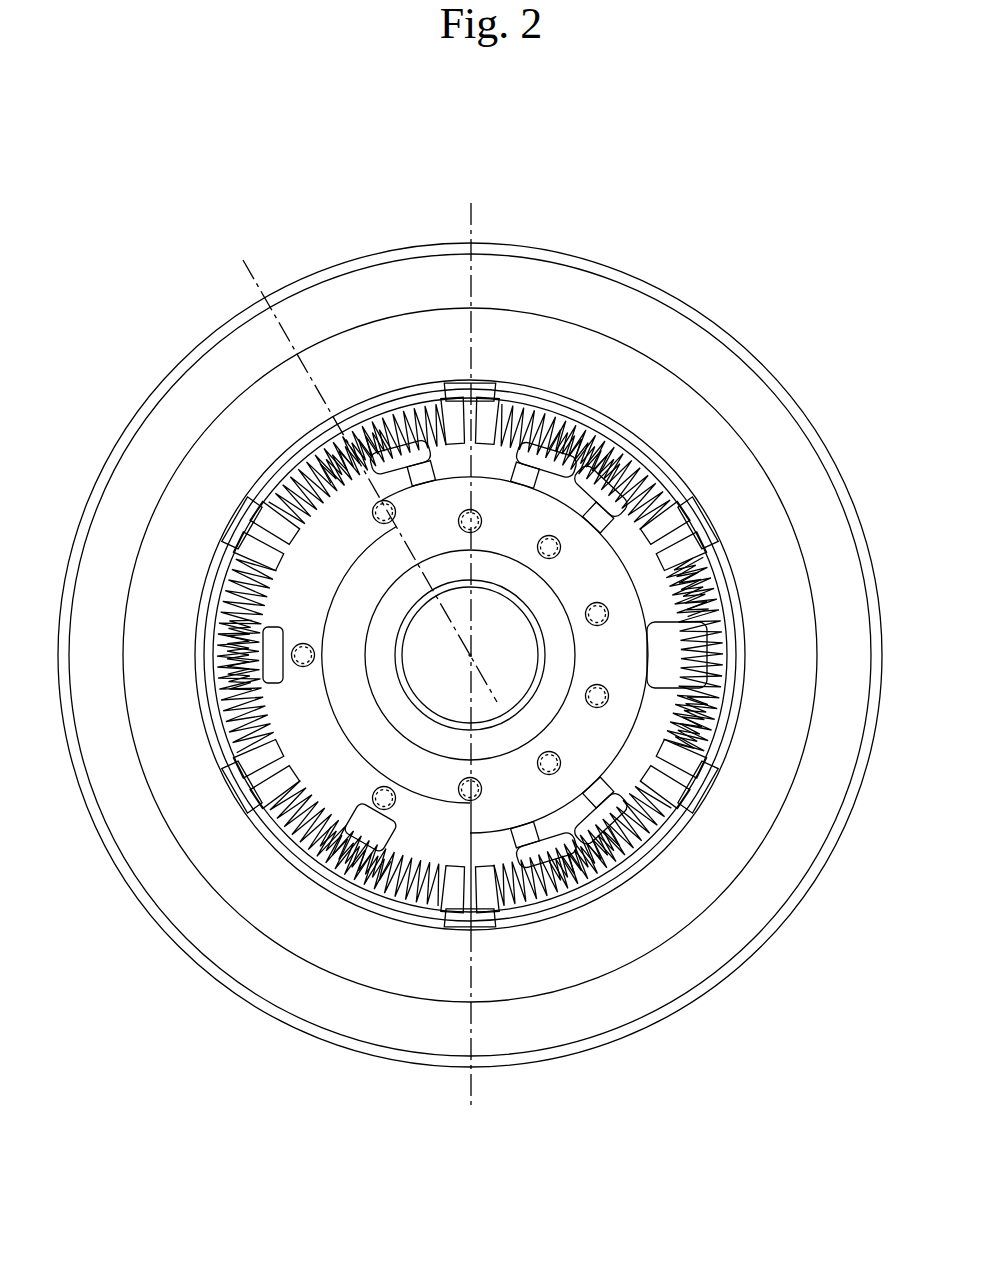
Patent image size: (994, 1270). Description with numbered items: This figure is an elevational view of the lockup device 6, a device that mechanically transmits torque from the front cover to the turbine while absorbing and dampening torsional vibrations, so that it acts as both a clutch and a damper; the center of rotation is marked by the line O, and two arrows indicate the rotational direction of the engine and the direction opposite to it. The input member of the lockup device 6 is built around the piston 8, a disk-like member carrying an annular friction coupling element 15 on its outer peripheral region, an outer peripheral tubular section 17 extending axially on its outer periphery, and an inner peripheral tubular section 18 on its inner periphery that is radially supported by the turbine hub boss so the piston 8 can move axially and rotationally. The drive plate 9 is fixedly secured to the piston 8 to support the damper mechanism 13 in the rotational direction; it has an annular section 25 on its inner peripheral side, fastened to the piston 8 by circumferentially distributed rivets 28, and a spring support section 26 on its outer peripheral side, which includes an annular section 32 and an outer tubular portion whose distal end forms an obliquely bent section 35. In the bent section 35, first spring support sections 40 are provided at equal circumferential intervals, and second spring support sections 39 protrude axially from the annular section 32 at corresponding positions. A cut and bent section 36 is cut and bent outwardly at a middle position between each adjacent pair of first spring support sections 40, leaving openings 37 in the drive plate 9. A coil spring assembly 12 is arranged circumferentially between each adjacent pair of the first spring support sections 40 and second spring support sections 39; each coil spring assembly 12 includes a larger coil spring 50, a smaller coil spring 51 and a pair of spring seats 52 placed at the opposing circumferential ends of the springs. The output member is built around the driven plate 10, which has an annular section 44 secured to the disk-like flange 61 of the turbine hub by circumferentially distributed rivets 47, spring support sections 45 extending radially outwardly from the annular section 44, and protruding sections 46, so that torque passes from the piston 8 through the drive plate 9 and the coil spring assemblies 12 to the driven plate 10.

The lockup device 6 is at (627, 257).
The piston 8 is at (360, 358).
The drive plate 9 is at (323, 518).
The driven plate 10 is at (645, 563).
The coil spring assembly 12 is at (583, 426).
The damper mechanism 13 is at (582, 368).
The friction coupling element 15 is at (402, 277).
The outer peripheral tubular section 17 is at (538, 252).
The inner peripheral tubular section 18 is at (418, 617).
The annular section 25 is at (298, 605).
The spring support section 26 is at (274, 586).
The rivets 28 is at (386, 524).
The annular section 32 is at (228, 540).
The bent section 35 is at (198, 612).
The cut and bent section 36 is at (295, 640).
The openings 37 is at (276, 676).
The second spring support sections 39 is at (265, 495).
The first spring support sections 40 is at (247, 536).
The annular section 44 is at (519, 392).
The spring support sections 45 is at (460, 382).
The protruding sections 46 is at (657, 470).
The rivets 47 is at (484, 518).
The larger coil spring 50 is at (348, 868).
The smaller coil spring 51 is at (385, 905).
The spring seats 52 is at (262, 808).
The flange 61 is at (700, 660).
The line O— O is at (471, 655).